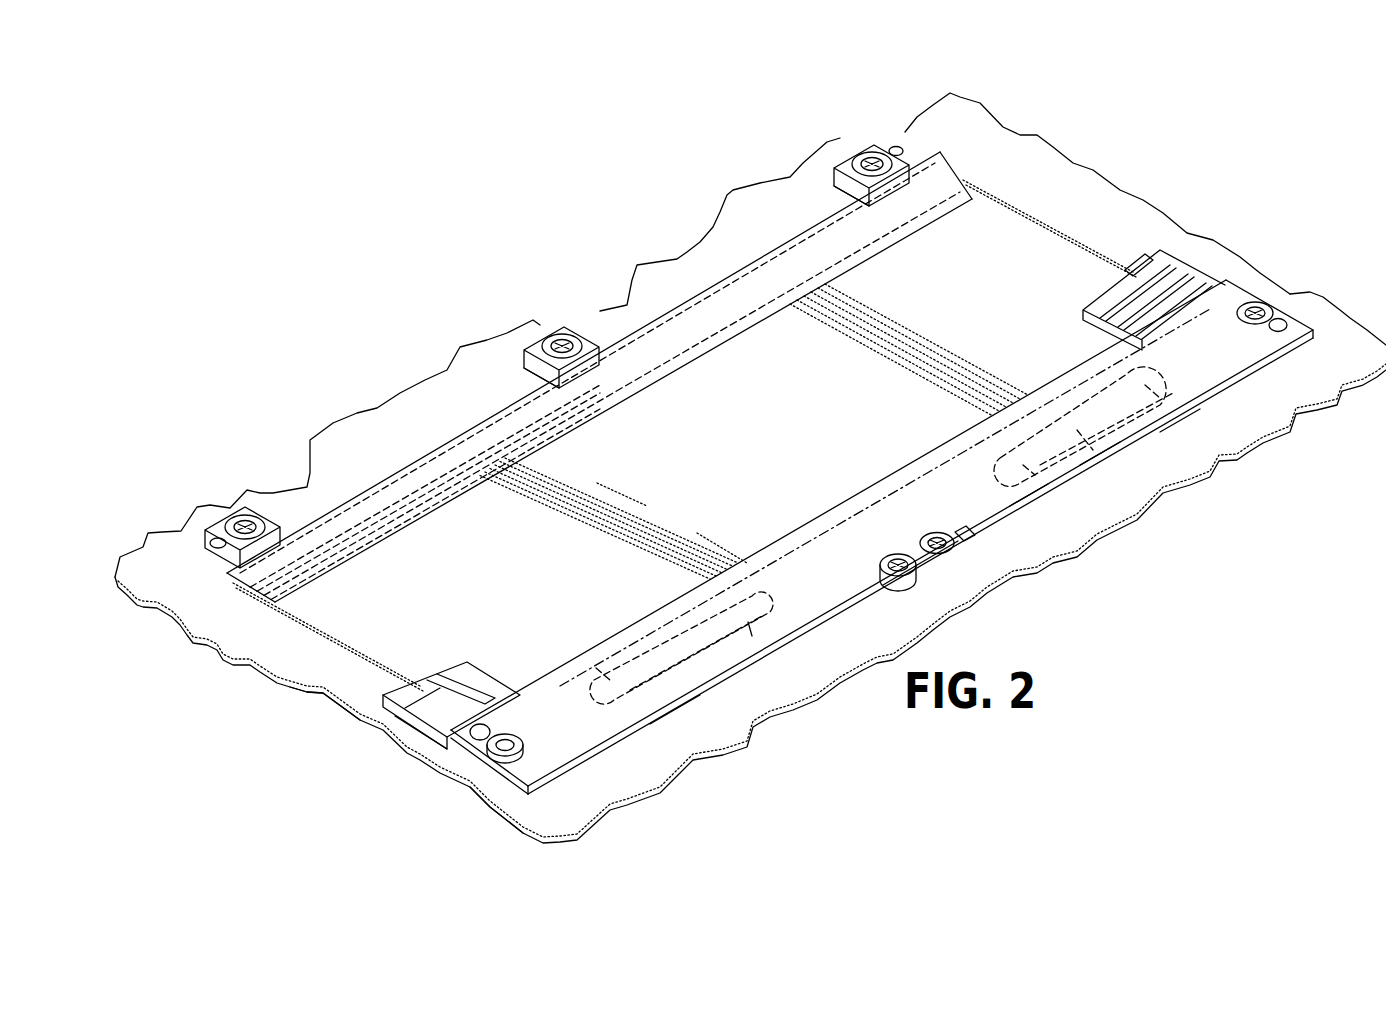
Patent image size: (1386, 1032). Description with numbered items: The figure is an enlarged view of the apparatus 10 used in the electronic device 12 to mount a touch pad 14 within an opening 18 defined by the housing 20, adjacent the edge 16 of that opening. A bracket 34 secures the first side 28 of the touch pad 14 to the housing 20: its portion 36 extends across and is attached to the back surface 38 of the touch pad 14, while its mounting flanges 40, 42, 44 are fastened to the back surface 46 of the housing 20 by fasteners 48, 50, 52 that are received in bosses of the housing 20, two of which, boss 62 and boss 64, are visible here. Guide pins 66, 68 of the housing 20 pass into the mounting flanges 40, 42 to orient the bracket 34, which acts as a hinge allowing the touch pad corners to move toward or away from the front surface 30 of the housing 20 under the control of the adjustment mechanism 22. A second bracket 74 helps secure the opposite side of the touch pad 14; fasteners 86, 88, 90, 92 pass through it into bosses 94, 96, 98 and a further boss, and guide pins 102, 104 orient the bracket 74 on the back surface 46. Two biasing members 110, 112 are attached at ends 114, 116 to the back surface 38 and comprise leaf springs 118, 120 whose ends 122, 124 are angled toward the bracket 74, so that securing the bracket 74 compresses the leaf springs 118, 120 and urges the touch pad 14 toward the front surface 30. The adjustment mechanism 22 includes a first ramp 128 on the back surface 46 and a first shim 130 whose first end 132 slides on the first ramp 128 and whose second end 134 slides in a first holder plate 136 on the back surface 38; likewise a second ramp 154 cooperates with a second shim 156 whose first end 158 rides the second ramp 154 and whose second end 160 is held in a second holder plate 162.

The apparatus 10 is at (1062, 312).
The electronic device 12 is at (408, 380).
The touch pad 14 is at (348, 615).
The edge 16 is at (1040, 222).
The opening 18 is at (1073, 238).
The housing 20 is at (1347, 330).
The adjustment mechanism 22 is at (419, 712).
The first side 28 is at (975, 182).
The front surface 30 is at (725, 758).
The bracket 34 is at (600, 424).
The portion 36 is at (745, 316).
The back surface 38 is at (752, 455).
The mounting flange 40 is at (228, 510).
The mounting flange 42 is at (537, 330).
The mounting flange 44 is at (886, 142).
The back surface 46 is at (325, 678).
The fastener 48 is at (242, 510).
The fastener 50 is at (556, 327).
The fastener 52 is at (866, 148).
The boss 62 is at (525, 372).
The boss 64 is at (848, 190).
The guide pin 66 is at (212, 535).
The guide pin 68 is at (898, 145).
The bracket 74 is at (840, 505).
The fastener 86 is at (525, 745).
The fastener 88 is at (896, 548).
The fastener 90 is at (937, 530).
The fastener 92 is at (1259, 302).
The boss 94 is at (488, 795).
The boss 96 is at (900, 588).
The boss 98 is at (972, 560).
The guide pin 102 is at (492, 727).
The guide pin 104 is at (1283, 320).
The biasing member 110 is at (652, 634).
The biasing member 112 is at (1054, 400).
The end 114 is at (760, 632).
The end 116 is at (1045, 487).
The leaf spring 118 is at (700, 700).
The leaf spring 120 is at (1105, 462).
The end 122 is at (590, 662).
The end 124 is at (1187, 418).
The first ramp 128 is at (1216, 278).
The first shim 130 is at (1140, 274).
The first end 132 is at (1133, 257).
The second end 134 is at (1085, 290).
The first holder plate 136 is at (1150, 335).
The second ramp 154 is at (415, 724).
The second shim 156 is at (424, 675).
The first end 158 is at (395, 722).
The second end 160 is at (450, 668).
The second holder plate 162 is at (514, 690).